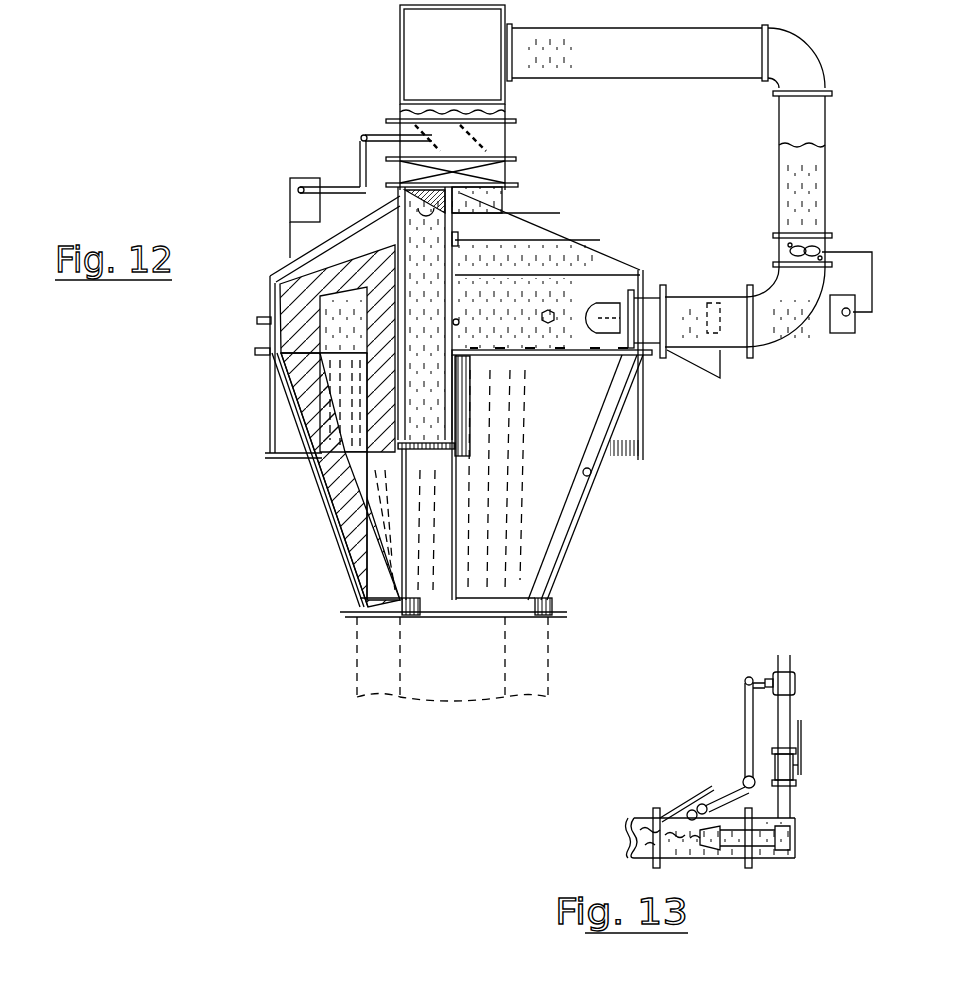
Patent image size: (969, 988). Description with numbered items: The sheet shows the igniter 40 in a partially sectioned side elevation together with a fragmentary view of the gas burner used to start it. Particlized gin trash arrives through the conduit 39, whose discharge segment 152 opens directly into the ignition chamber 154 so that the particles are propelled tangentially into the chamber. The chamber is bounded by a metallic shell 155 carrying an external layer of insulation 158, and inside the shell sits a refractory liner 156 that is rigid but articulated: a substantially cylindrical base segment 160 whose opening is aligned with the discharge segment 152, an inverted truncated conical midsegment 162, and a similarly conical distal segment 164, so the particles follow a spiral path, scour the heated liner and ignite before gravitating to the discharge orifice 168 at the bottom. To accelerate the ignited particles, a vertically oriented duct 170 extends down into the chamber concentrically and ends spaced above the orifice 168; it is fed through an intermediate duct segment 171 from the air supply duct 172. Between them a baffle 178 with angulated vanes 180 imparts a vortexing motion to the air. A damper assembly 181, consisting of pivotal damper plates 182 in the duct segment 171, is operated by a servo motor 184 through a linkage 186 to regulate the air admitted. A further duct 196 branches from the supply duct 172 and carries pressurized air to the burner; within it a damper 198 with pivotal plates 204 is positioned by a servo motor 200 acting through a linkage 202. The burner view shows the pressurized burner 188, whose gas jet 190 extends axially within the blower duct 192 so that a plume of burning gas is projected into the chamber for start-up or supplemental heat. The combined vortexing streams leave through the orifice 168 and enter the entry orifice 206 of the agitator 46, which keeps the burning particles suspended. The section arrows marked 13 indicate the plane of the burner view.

In FIG. 12, the air supply duct 172 is at (470, 58).
In FIG. 12, the duct 196 is at (672, 42).
In FIG. 12, the linkage 186 is at (353, 152).
In FIG. 12, the servo motor 184 is at (312, 178).
In FIG. 12, the intermediate duct segment 171 is at (503, 134).
In FIG. 12, the pivotal damper plates 182 is at (465, 150).
In FIG. 12, the damper assembly 181 is at (518, 151).
In FIG. 12, the baffle 178 is at (398, 197).
In FIG. 12, the angulated vanes 180 is at (433, 207).
In FIG. 12, the vertically oriented duct 170 is at (442, 301).
In FIG. 12, the discharge segment 152 is at (602, 318).
In FIG. 12, the conduit 39 is at (633, 320).
In FIG. 12, the pivotal plates 204 is at (790, 250).
In FIG. 12, the damper 198 is at (836, 242).
In FIG. 12, the linkage 202 is at (868, 296).
In FIG. 12, the servo motor 200 is at (852, 333).
In FIG. 12, the ignition chamber 154 is at (335, 315).
In FIG. 12, the base segment 160 is at (335, 342).
In FIG. 12, the metallic shell 155 is at (273, 366).
In FIG. 12, the midsegment 162 is at (335, 370).
In FIG. 12, the liner 156 is at (308, 400).
In FIG. 12, the layer of insulation 158 is at (300, 420).
In FIG. 12, the igniter 40 is at (268, 486).
In FIG. 12, the distal segment 164 is at (385, 490).
In FIG. 12, the discharge orifice 168 is at (420, 608).
In FIG. 12, the entry orifice 206 is at (423, 648).
In FIG. 12, the agitator 46 is at (556, 657).
In FIG. 12, the section line 13- 13 is at (650, 356).
In FIG. 13, the pressurized burner 188 is at (802, 838).
In FIG. 13, the gas jet 190 is at (712, 842).
In FIG. 13, the blower duct 192 is at (636, 816).